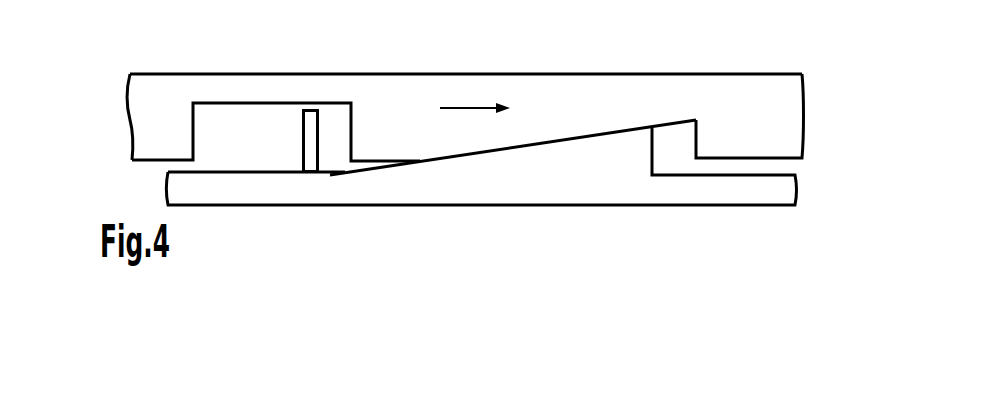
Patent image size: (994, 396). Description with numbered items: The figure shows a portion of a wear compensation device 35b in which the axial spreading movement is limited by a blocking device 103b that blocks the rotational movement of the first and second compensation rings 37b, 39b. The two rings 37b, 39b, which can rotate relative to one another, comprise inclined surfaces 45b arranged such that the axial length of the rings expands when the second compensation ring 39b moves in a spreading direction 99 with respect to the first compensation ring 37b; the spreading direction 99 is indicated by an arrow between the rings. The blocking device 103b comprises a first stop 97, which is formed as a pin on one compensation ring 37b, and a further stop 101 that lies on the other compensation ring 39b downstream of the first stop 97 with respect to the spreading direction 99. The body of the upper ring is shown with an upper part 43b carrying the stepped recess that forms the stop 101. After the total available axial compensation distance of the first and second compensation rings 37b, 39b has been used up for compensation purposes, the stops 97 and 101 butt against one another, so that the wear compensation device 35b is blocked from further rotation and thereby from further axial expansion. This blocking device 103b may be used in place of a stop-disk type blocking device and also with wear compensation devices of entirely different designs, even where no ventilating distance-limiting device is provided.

The wear compensation device 35b is at (122, 88).
The stop 101 is at (195, 142).
The blocking device 103b is at (288, 127).
The spreading direction 99 is at (460, 108).
The inclined surfaces 45b is at (557, 138).
The upper part 43b is at (596, 74).
The second compensation ring 39b is at (784, 120).
The first stop 97 is at (298, 142).
The first compensation ring 37b is at (585, 180).